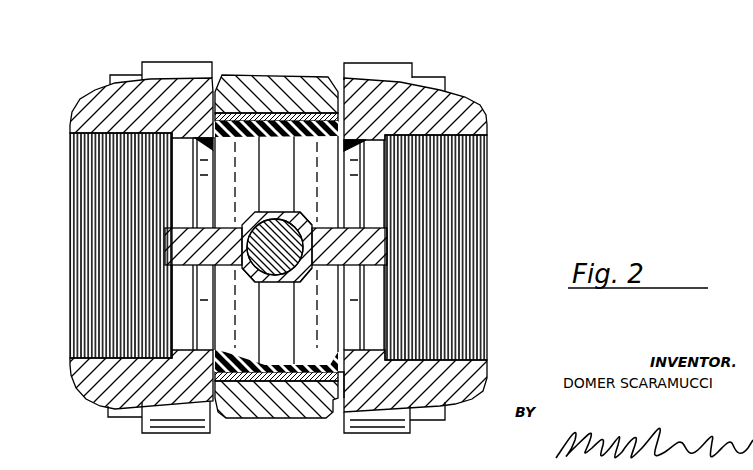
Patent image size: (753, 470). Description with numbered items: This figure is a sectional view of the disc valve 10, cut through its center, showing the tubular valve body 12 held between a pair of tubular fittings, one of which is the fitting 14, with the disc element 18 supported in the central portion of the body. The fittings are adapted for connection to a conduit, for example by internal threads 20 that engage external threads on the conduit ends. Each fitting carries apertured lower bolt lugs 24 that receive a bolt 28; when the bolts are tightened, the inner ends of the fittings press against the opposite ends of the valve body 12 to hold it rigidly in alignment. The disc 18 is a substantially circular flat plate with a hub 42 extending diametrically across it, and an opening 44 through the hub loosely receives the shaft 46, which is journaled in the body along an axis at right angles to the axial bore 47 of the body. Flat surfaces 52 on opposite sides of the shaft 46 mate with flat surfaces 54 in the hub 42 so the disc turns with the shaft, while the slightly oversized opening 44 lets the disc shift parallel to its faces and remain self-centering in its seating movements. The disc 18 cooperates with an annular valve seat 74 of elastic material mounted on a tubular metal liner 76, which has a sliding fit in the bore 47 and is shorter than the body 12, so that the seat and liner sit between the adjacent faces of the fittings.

The disc valve 10 is at (82, 98).
The tubular valve body 12 is at (290, 58).
The tubular fitting 14 is at (85, 128).
The disc element 18 is at (175, 246).
The internal threads 20 is at (78, 205).
The lower bolt lugs 24 is at (181, 50).
The bolt 28 is at (125, 75).
The hub 42 is at (250, 222).
The opening 44 is at (255, 274).
The shaft 46 is at (262, 280).
The axial bore 47 is at (340, 382).
The flat surfaces 52 is at (296, 216).
The mating flat surfaces 54 is at (304, 276).
The annular valve seat 74 is at (278, 115).
The metal liner 76 is at (270, 108).